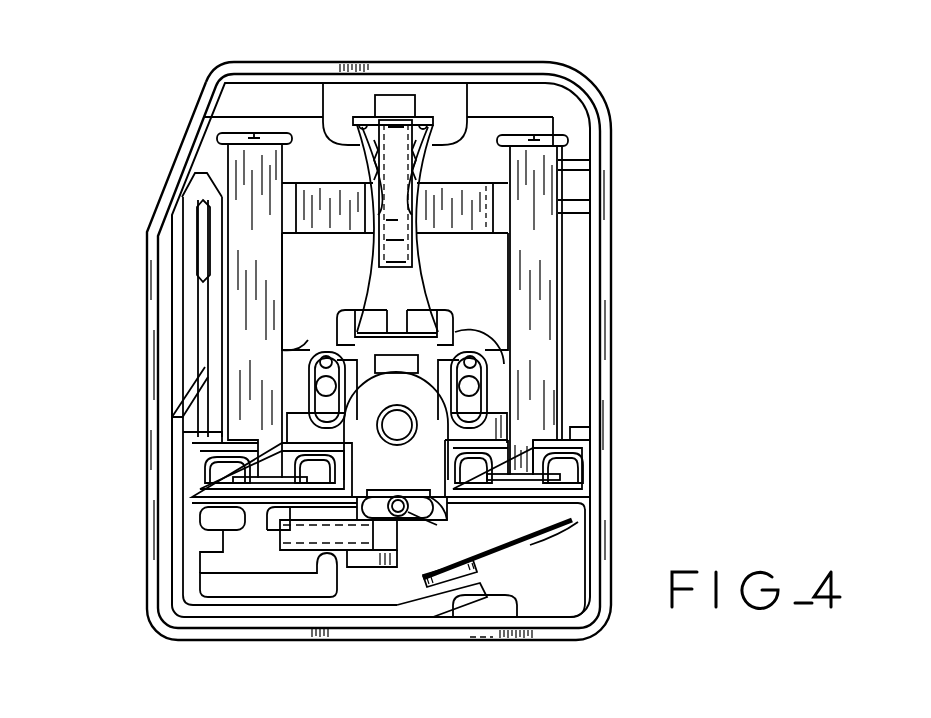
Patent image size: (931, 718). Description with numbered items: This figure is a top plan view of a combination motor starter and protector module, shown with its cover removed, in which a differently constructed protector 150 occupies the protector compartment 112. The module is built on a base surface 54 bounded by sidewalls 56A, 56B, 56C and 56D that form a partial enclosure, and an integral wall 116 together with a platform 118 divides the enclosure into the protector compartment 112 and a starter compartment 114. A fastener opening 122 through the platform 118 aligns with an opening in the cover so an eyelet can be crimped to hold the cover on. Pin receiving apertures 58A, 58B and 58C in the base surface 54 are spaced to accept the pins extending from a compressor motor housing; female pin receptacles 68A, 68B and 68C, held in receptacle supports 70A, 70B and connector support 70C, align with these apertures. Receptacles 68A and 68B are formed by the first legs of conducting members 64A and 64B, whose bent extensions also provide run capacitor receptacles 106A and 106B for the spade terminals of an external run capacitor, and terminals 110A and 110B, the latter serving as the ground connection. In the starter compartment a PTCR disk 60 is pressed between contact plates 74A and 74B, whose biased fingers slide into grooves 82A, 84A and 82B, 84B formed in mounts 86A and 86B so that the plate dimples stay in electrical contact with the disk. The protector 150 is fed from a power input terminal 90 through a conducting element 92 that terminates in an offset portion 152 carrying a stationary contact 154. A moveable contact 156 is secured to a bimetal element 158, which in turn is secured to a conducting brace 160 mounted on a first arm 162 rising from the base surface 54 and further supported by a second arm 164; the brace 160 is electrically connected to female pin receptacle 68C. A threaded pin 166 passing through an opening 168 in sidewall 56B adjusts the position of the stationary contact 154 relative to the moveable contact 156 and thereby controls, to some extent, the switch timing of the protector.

The base surface 54 is at (322, 303).
The sidewall 56A is at (611, 340).
The sidewall 56B is at (360, 638).
The sidewall 56C is at (148, 400).
The sidewall 56D is at (472, 70).
The pin receiving aperture 58A is at (484, 375).
The pin receiving aperture 58B is at (430, 521).
The pin receiving aperture 58C is at (310, 392).
The PTCR disk 60 is at (395, 130).
The conducting member 64A is at (552, 248).
The conducting member 64B is at (237, 288).
The female pin receptacle 68A is at (466, 352).
The female pin receptacle 68B is at (316, 376).
The female pin receptacle 68C is at (394, 496).
The receptacle support 70A is at (486, 352).
The receptacle support 70B is at (316, 362).
The connector support 70C is at (445, 511).
The contact plate 74A is at (422, 177).
The contact plate 74B is at (374, 247).
The groove 82A is at (423, 117).
The groove 82B is at (421, 322).
The groove 84A is at (377, 117).
The groove 84B is at (352, 328).
The mount 86A is at (337, 97).
The mount 86B is at (300, 342).
The power input terminal 90 is at (198, 214).
The conducting element 92 is at (292, 535).
The run capacitor receptacle 106A is at (588, 468).
The run capacitor receptacle 106B is at (210, 468).
The terminal 110A is at (568, 142).
The terminal 110B is at (222, 138).
The protector compartment 112 is at (587, 593).
The starter compartment 114 is at (562, 98).
The integral wall 116 is at (585, 499).
The platform 118 is at (505, 460).
The fastener opening 122 is at (397, 412).
The protector 150 is at (574, 522).
The offset portion 152 is at (440, 605).
The stationary contact 154 is at (478, 578).
The moveable contact 156 is at (503, 553).
The bimetal element 158 is at (562, 538).
The conducting brace 160 is at (290, 533).
The first arm 162 is at (257, 533).
The second arm 164 is at (277, 585).
The threaded pin 166 is at (527, 603).
The opening 168 is at (462, 617).